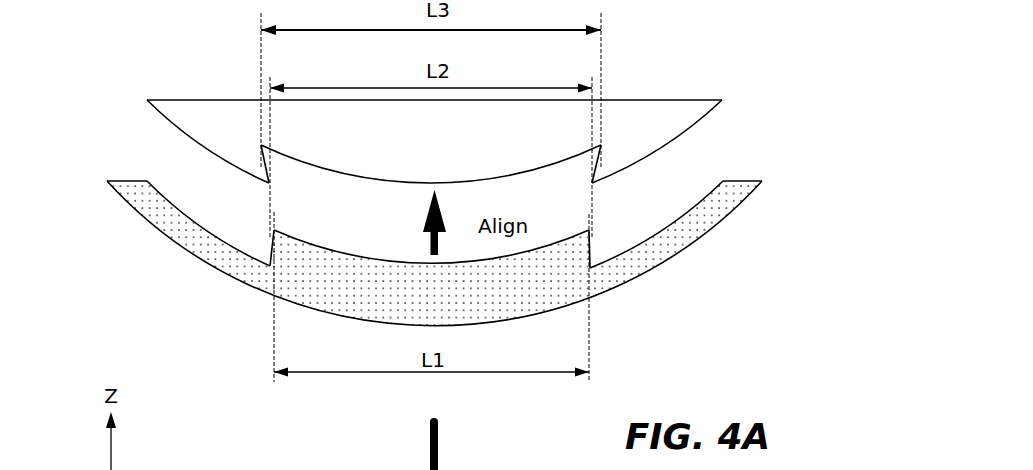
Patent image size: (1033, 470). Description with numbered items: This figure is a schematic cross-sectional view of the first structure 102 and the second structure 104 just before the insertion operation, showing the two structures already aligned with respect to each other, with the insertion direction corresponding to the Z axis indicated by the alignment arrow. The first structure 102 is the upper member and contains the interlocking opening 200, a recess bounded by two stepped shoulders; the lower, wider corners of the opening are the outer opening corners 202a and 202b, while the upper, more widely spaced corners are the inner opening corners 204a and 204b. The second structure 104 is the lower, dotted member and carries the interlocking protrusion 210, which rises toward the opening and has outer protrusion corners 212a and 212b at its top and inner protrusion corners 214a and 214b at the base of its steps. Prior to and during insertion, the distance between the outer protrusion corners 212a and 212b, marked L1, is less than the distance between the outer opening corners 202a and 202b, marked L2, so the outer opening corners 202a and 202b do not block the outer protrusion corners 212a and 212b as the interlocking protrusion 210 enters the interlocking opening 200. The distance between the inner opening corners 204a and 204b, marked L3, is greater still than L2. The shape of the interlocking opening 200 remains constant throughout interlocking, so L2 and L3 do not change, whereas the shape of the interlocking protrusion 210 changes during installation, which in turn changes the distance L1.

The first structure 102 is at (674, 110).
The second structure 104 is at (451, 282).
The interlocking opening 200 is at (438, 111).
The outer opening corner 202a is at (593, 183).
The outer opening corner 202b is at (268, 183).
The inner opening corner 204a is at (600, 147).
The inner opening corner 204b is at (260, 144).
The interlocking protrusion 210 is at (572, 253).
The outer protrusion corner 212a is at (591, 234).
The outer protrusion corner 212b is at (273, 230).
The inner protrusion corner 214a is at (592, 269).
The inner protrusion corner 214b is at (273, 267).